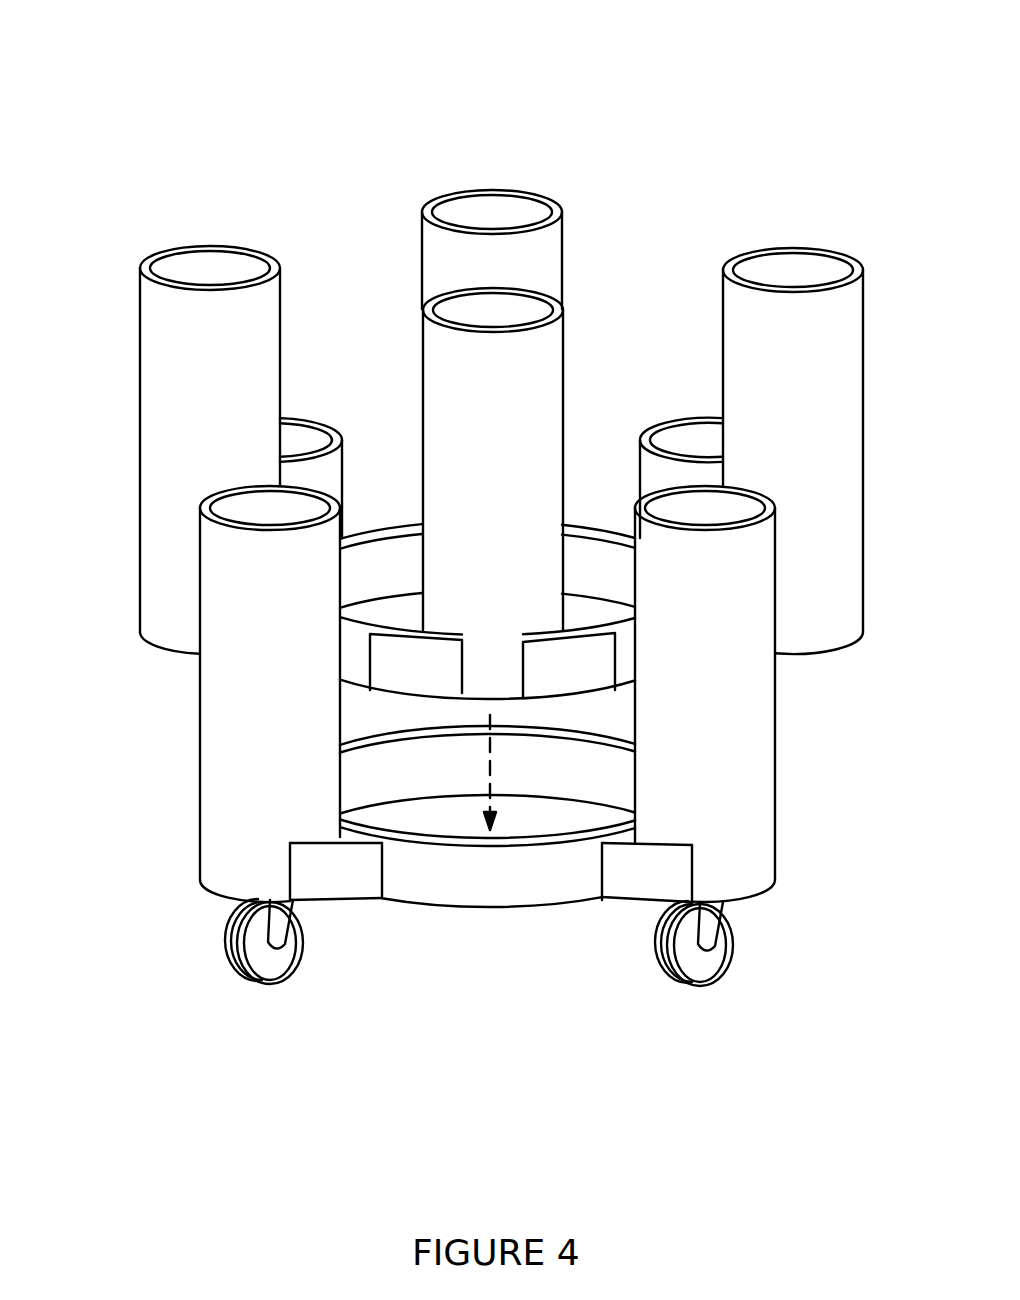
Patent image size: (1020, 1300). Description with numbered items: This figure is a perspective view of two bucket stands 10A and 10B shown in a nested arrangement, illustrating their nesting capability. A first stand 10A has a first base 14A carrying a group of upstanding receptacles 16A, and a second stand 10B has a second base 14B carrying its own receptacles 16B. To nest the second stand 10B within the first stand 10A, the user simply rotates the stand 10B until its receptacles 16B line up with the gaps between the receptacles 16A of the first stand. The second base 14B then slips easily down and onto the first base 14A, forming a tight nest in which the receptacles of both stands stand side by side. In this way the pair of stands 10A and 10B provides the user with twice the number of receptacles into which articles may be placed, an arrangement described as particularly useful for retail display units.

The first bucket stand 10A is at (122, 834).
The second bucket stand 10B is at (268, 142).
The first base 14A is at (548, 885).
The second base 14B is at (430, 673).
The receptacles of the first stand 16A is at (728, 789).
The receptacles of the second stand 16B is at (271, 252).